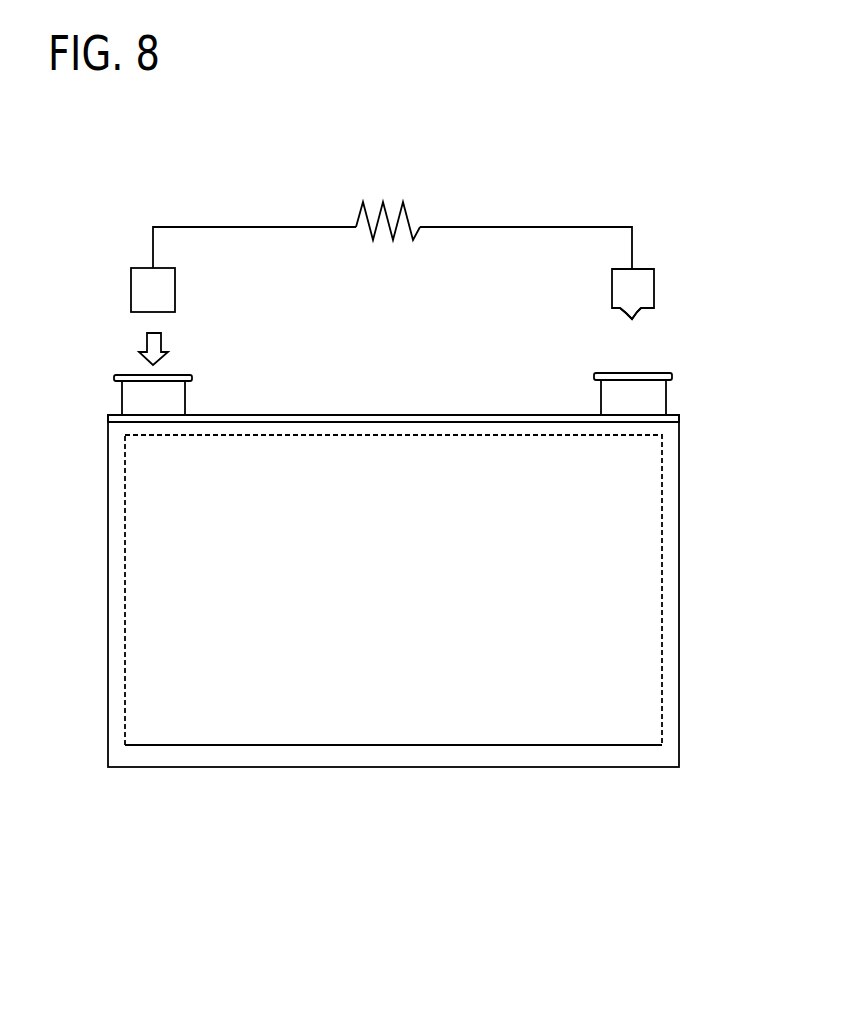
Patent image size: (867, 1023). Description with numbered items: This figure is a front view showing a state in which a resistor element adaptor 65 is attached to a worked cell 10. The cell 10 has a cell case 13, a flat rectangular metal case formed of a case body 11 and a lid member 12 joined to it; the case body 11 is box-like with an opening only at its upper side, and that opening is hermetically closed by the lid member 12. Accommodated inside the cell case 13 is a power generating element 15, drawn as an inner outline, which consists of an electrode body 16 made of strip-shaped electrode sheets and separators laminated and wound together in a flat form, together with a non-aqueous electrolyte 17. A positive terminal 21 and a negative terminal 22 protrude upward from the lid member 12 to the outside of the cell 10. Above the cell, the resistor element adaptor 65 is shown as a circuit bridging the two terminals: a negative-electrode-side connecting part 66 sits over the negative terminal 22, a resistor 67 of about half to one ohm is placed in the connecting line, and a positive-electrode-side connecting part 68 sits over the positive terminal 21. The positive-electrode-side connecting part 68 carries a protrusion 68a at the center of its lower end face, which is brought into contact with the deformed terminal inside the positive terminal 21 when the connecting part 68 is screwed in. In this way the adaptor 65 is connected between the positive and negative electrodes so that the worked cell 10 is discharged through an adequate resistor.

The cell 10 is at (446, 588).
The case body 11 is at (672, 452).
The lid member 12 is at (673, 413).
The cell case 13 is at (446, 575).
The power generating element 15 is at (393, 643).
The electrode body 16 is at (448, 730).
The non-aqueous electrolyte 17 is at (428, 812).
The positive terminal 21 is at (650, 372).
The negative terminal 22 is at (172, 376).
The resistor element adaptor 65 is at (476, 226).
The negative-electrode-side connecting part 66 is at (131, 290).
The resistor 67 is at (391, 243).
The positive-electrode-side connecting part 68 is at (648, 288).
The protrusion 68a is at (637, 318).